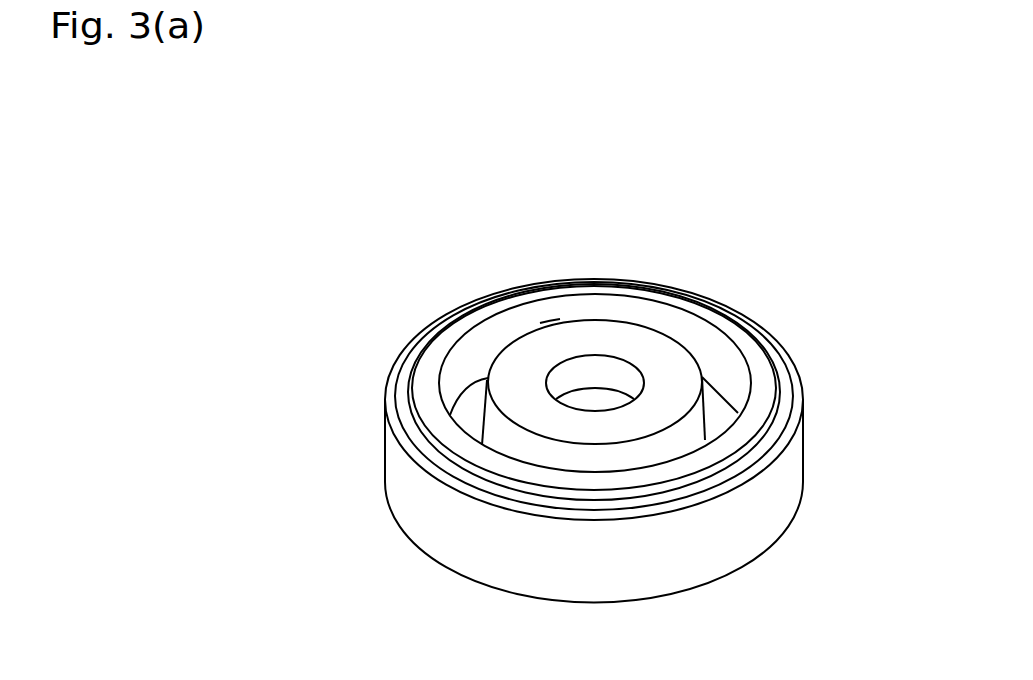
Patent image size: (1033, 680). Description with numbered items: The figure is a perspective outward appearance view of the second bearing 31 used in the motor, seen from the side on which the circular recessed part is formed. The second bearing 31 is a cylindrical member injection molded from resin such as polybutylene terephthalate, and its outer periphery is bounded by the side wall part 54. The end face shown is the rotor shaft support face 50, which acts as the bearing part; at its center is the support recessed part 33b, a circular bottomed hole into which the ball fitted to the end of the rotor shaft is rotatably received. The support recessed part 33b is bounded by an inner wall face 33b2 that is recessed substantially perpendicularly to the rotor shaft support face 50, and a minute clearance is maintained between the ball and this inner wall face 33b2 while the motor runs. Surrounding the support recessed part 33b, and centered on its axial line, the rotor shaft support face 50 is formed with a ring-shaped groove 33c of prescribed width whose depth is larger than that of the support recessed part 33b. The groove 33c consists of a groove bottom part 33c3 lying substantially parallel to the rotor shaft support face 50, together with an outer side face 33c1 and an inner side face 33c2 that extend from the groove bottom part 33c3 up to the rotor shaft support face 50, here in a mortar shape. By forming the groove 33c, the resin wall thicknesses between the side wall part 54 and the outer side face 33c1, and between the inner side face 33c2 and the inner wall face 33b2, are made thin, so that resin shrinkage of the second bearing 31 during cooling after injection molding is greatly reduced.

The second bearing 31 is at (280, 111).
The support recessed part 33b is at (623, 378).
The inner wall face 33b2 is at (560, 380).
The groove 33c is at (455, 372).
The outer side face 33c1 is at (555, 313).
The inner side face 33c2 is at (500, 433).
The groove bottom part 33c3 is at (722, 413).
The rotor shaft support face 50 is at (663, 350).
The side wall part 54 is at (804, 452).